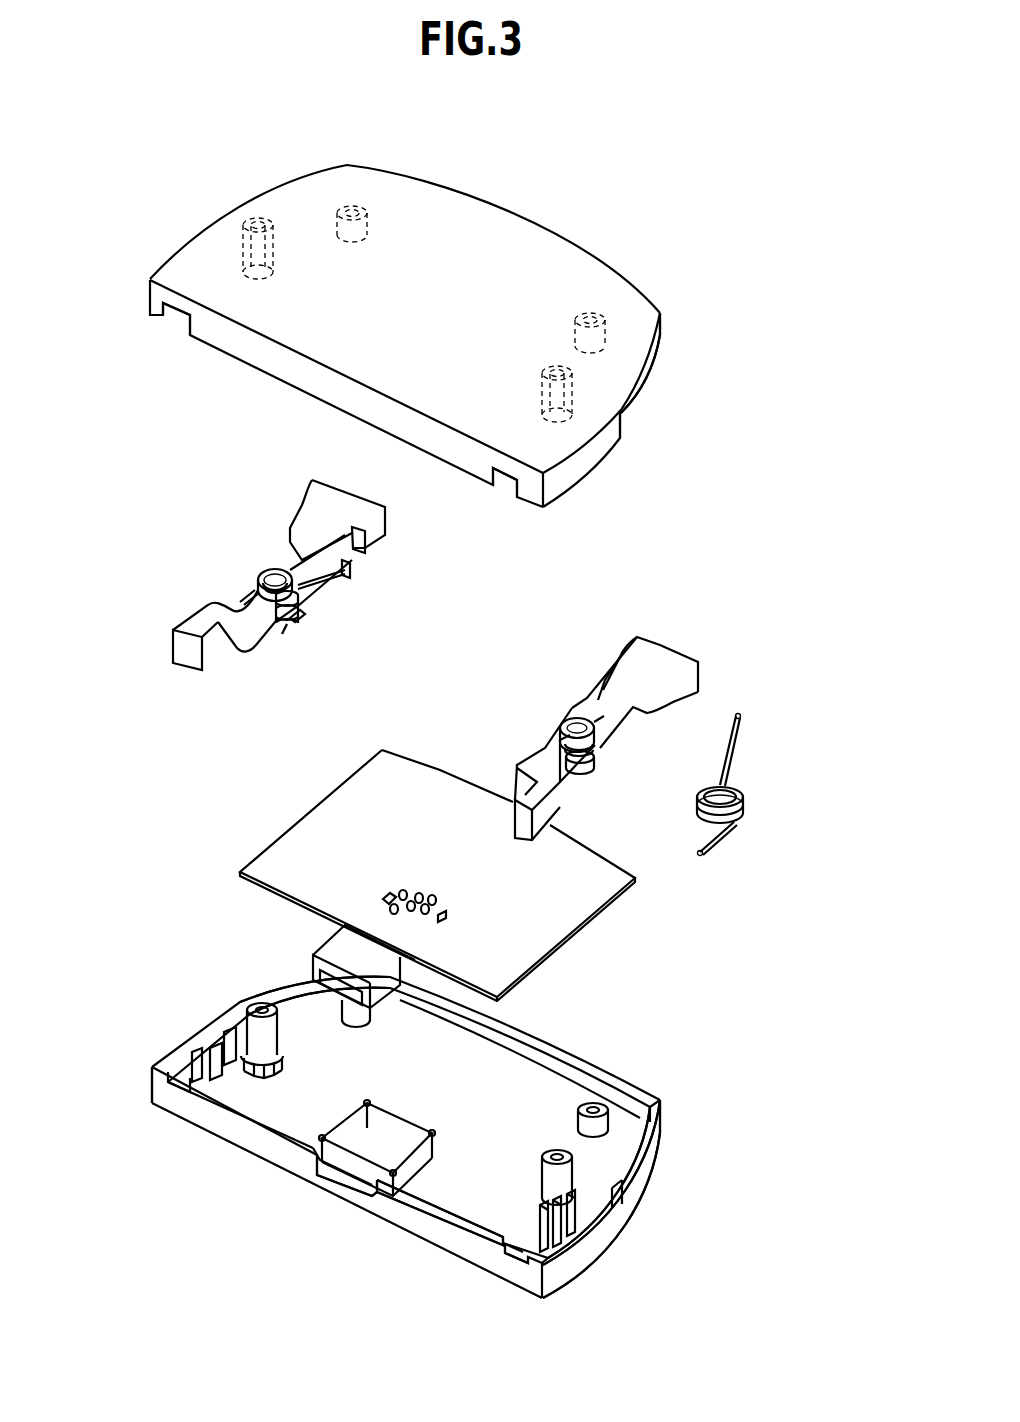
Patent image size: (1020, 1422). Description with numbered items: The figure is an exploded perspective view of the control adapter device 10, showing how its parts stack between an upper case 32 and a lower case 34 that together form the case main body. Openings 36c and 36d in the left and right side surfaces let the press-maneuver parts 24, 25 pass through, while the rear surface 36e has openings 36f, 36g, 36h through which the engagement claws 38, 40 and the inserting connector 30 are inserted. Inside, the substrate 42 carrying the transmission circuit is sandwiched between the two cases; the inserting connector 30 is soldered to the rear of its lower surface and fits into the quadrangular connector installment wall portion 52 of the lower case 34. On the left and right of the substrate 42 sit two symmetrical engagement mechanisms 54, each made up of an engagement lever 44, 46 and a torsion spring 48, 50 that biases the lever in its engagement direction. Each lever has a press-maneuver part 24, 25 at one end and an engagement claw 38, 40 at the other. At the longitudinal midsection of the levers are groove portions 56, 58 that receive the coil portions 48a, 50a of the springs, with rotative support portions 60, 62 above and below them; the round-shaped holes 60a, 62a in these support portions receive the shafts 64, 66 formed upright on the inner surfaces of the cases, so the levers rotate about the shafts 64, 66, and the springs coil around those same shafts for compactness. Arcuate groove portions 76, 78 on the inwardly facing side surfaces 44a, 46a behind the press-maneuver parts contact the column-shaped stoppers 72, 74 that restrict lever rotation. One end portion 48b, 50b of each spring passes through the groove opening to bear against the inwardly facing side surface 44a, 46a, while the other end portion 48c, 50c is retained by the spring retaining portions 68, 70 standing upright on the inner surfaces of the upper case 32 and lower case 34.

The control adapter device 10 is at (151, 166).
The press-maneuver part 24 is at (314, 480).
The press-maneuver part 25 is at (690, 655).
The inserting connector 30 is at (330, 952).
The upper case 32 is at (567, 224).
The lower case 34 is at (615, 1253).
The opening 36c is at (283, 1002).
The opening 36d is at (640, 387).
The rear surface 36e is at (415, 1215).
The opening 36f is at (178, 318).
The opening 36g is at (508, 490).
The opening 36h is at (345, 1180).
The engagement claw 38 is at (172, 660).
The engagement claw 40 is at (520, 832).
The substrate 42 is at (575, 905).
The engagement lever 44 is at (238, 692).
The inwardly facing side surface 44a is at (352, 600).
The engagement lever 46 is at (498, 752).
The inwardly facing side surface 46a is at (572, 715).
The torsion spring 48 is at (303, 634).
The coil portion 48a is at (287, 634).
The one end portion 48b is at (345, 575).
The other end portion 48c is at (235, 603).
The torsion spring 50 is at (760, 806).
The coil portion 50a is at (700, 805).
The one end portion 50b is at (742, 718).
The other end portion 50c is at (712, 855).
The connector installment wall portion 52 is at (410, 1108).
The engagement mechanism 54 is at (252, 450).
The groove portion 56 is at (305, 615).
The groove portion 58 is at (600, 750).
The rotative support portion 60 is at (258, 580).
The round-shaped hole 60a is at (272, 577).
The rotative support portion 62 is at (604, 718).
The round-shaped hole 62a is at (560, 725).
The shaft 64 is at (275, 255).
The shaft 66 is at (535, 393).
The spring retaining portion 68 is at (220, 1048).
The spring retaining portion 70 is at (583, 1215).
The stopper 72 is at (368, 235).
The stopper 74 is at (604, 318).
The arcuate groove portion 76 is at (370, 545).
The arcuate groove portion 78 is at (622, 655).